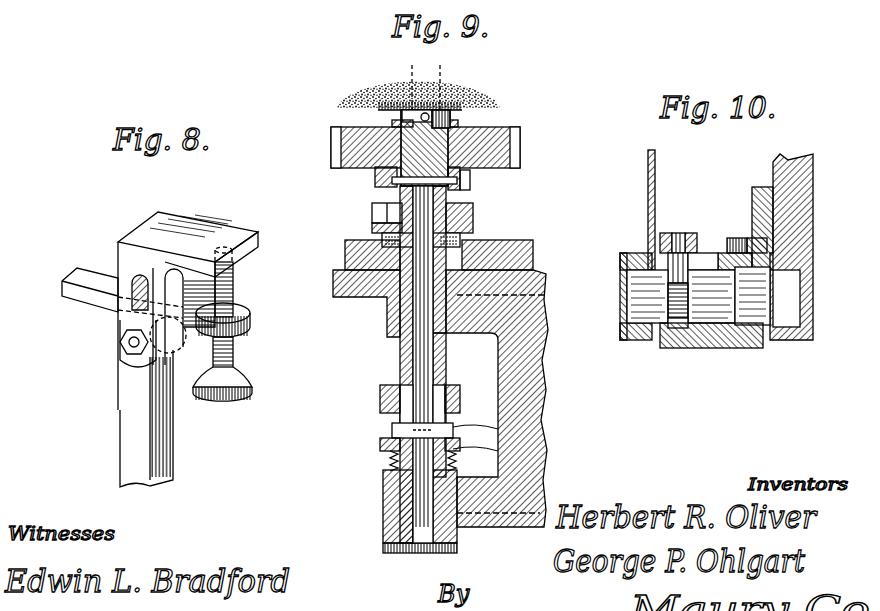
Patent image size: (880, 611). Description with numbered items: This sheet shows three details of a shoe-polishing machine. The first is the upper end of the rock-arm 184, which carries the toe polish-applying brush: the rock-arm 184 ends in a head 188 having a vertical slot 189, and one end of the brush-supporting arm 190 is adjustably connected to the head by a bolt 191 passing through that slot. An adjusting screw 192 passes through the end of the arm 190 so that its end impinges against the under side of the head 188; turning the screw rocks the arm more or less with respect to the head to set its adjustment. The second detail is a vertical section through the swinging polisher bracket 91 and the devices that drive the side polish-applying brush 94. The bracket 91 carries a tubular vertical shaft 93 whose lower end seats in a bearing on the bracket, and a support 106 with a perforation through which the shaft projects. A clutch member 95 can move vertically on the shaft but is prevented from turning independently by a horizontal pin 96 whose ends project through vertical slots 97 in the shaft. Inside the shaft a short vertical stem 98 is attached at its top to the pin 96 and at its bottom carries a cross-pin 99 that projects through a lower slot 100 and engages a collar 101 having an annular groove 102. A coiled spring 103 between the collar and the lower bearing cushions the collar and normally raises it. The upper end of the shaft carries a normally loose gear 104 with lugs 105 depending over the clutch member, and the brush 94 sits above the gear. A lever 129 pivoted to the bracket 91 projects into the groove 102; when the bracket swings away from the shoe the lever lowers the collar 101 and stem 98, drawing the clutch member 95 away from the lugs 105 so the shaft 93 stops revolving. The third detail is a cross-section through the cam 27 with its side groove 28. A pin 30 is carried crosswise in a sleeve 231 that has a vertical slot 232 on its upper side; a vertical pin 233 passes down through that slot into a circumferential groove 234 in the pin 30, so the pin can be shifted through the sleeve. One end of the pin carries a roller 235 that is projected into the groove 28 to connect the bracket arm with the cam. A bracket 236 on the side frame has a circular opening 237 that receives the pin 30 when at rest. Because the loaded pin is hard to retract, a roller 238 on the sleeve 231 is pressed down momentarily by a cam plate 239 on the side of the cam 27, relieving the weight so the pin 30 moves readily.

In FIG. 8, the rock-arm 184 is at (132, 446).
In FIG. 8, the head 188 is at (182, 222).
In FIG. 8, the vertical slot 189 is at (137, 310).
In FIG. 8, the brush-supporting arm 190 is at (77, 272).
In FIG. 8, the bolt 191 is at (130, 344).
In FIG. 8, the adjusting screw 192 is at (235, 283).
In FIG. 9, the polish-applying brush 94 is at (366, 90).
In FIG. 9, the gear 104 is at (333, 148).
In FIG. 9, the lugs 105 is at (374, 180).
In FIG. 9, the vertical slots 97 is at (445, 202).
In FIG. 9, the clutch member 95 is at (474, 228).
In FIG. 9, the horizontal pin 96 is at (384, 240).
In FIG. 9, the support 106 is at (528, 252).
In FIG. 9, the swinging polisher bracket 91 is at (343, 297).
In FIG. 9, the vertical shaft 93 is at (402, 355).
In FIG. 9, the vertical stem 98 is at (428, 362).
In FIG. 9, the lever 129 is at (475, 425).
In FIG. 9, the lower slot 100 is at (400, 395).
In FIG. 9, the collar 101 is at (388, 410).
In FIG. 9, the cross-pin 99 is at (392, 430).
In FIG. 9, the annular groove 102 is at (385, 440).
In FIG. 9, the coiled spring 103 is at (390, 463).
In FIG. 10, the cam 27 is at (797, 158).
In FIG. 10, the groove 28 is at (790, 322).
In FIG. 10, the pin 30 is at (633, 285).
In FIG. 10, the sleeve 231 is at (688, 350).
In FIG. 10, the vertical slot 232 is at (700, 253).
In FIG. 10, the vertical pin 233 is at (677, 233).
In FIG. 10, the circumferential groove 234 is at (676, 323).
In FIG. 10, the roller 235 is at (750, 323).
In FIG. 10, the bracket 236 is at (630, 262).
In FIG. 10, the circular opening 237 is at (620, 315).
In FIG. 10, the roller 238 is at (746, 238).
In FIG. 10, the cam plate 239 is at (764, 187).